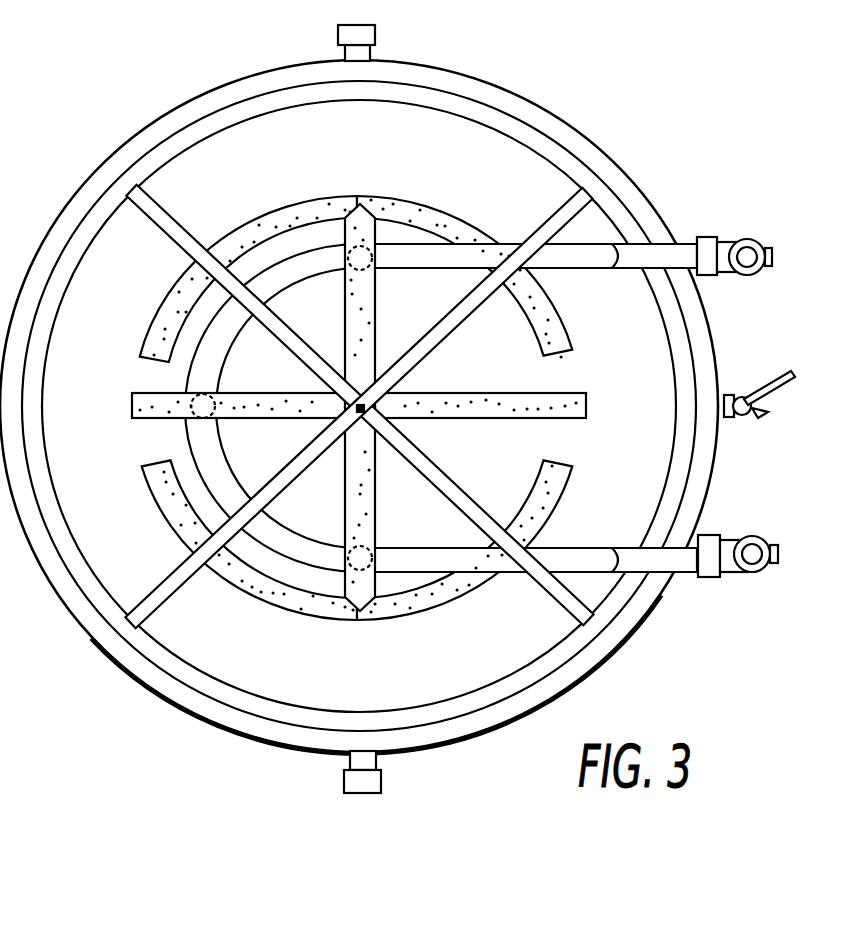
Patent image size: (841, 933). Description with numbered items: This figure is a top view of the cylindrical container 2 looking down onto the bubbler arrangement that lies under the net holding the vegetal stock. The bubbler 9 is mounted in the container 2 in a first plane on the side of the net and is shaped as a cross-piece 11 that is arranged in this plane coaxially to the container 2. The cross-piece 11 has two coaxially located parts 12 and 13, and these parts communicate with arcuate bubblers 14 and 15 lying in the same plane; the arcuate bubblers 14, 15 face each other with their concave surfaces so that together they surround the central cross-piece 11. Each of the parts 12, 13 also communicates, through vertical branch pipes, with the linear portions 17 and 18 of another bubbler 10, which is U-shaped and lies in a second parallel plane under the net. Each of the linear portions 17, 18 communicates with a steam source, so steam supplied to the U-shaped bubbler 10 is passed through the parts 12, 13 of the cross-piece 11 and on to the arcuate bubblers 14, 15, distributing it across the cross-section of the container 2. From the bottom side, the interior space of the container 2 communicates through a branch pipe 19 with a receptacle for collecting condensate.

The container 2 is at (107, 658).
The bubbler 9 is at (356, 395).
The bubbler 10 is at (596, 234).
The cross-piece 11 is at (459, 387).
The part of the cross-piece 12 is at (346, 308).
The part of the cross-piece 13 is at (375, 504).
The arcuate bubbler 14 is at (242, 231).
The arcuate bubbler 15 is at (298, 608).
The linear portion 17 is at (428, 245).
The linear portion 18 is at (465, 557).
The branch pipe 19 is at (735, 393).